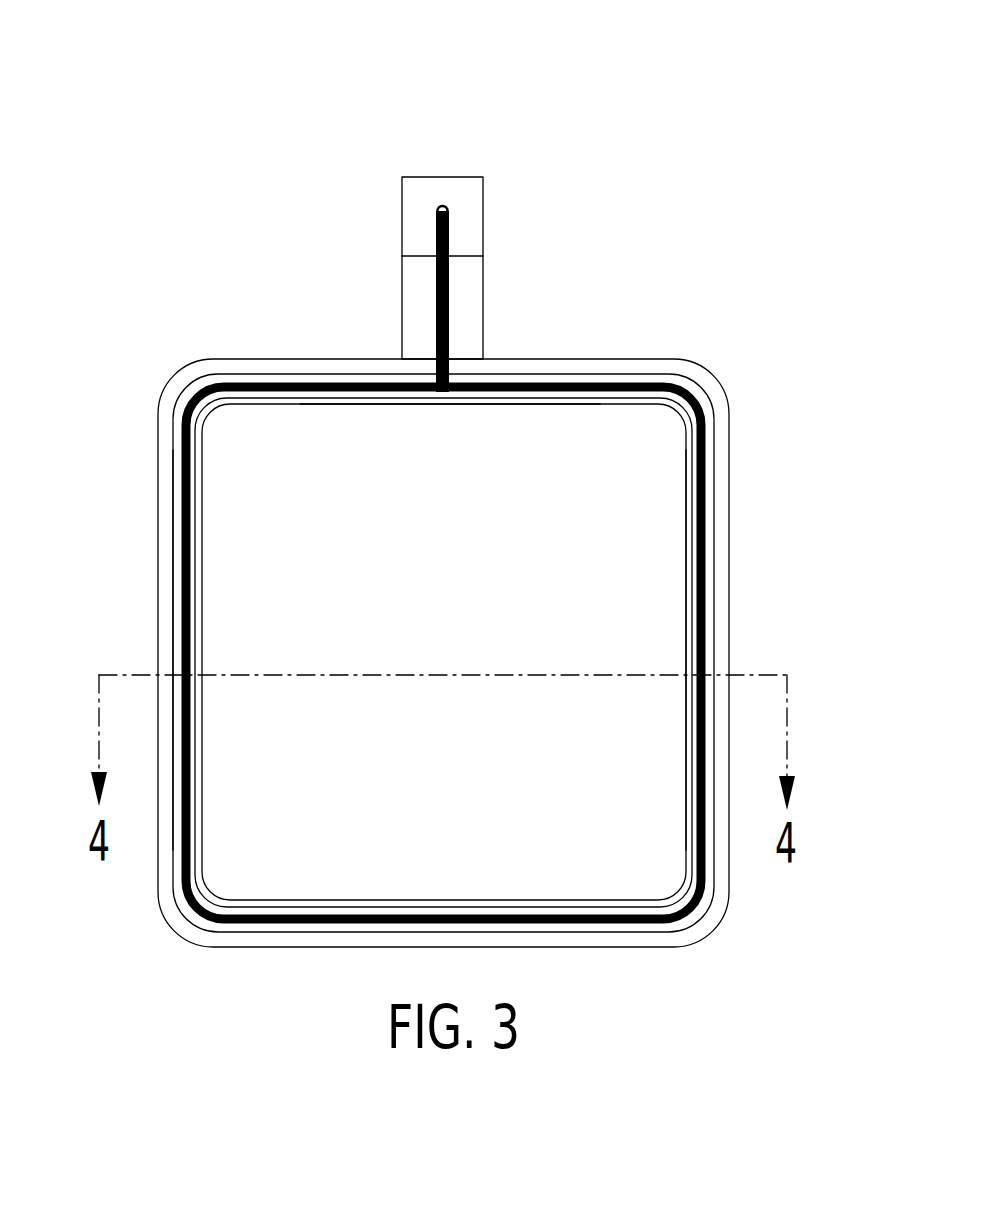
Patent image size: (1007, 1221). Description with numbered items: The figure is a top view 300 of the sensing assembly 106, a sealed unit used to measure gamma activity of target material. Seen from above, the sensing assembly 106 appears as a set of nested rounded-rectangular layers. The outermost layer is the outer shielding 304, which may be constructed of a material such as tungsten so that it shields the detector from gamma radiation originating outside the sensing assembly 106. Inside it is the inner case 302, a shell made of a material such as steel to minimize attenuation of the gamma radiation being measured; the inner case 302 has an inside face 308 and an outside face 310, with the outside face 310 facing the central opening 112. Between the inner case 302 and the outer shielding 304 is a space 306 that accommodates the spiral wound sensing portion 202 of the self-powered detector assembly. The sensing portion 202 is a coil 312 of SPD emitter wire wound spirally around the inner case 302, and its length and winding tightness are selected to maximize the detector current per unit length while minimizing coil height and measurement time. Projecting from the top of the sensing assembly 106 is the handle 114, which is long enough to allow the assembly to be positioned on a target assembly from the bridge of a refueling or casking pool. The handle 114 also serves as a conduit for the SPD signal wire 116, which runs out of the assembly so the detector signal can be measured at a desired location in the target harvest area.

The top view 300 is at (688, 96).
The sensing assembly 106 is at (169, 181).
The handle 114 is at (484, 223).
The SPD signal wire 116 is at (435, 315).
The opening 112 is at (580, 422).
The outer shielding 304 is at (729, 460).
The space 306 is at (714, 555).
The coil 312 is at (705, 612).
The inner case 302 is at (690, 513).
The outside face 310 is at (203, 512).
The inside face 308 is at (195, 595).
The sensing portion 202 is at (165, 572).